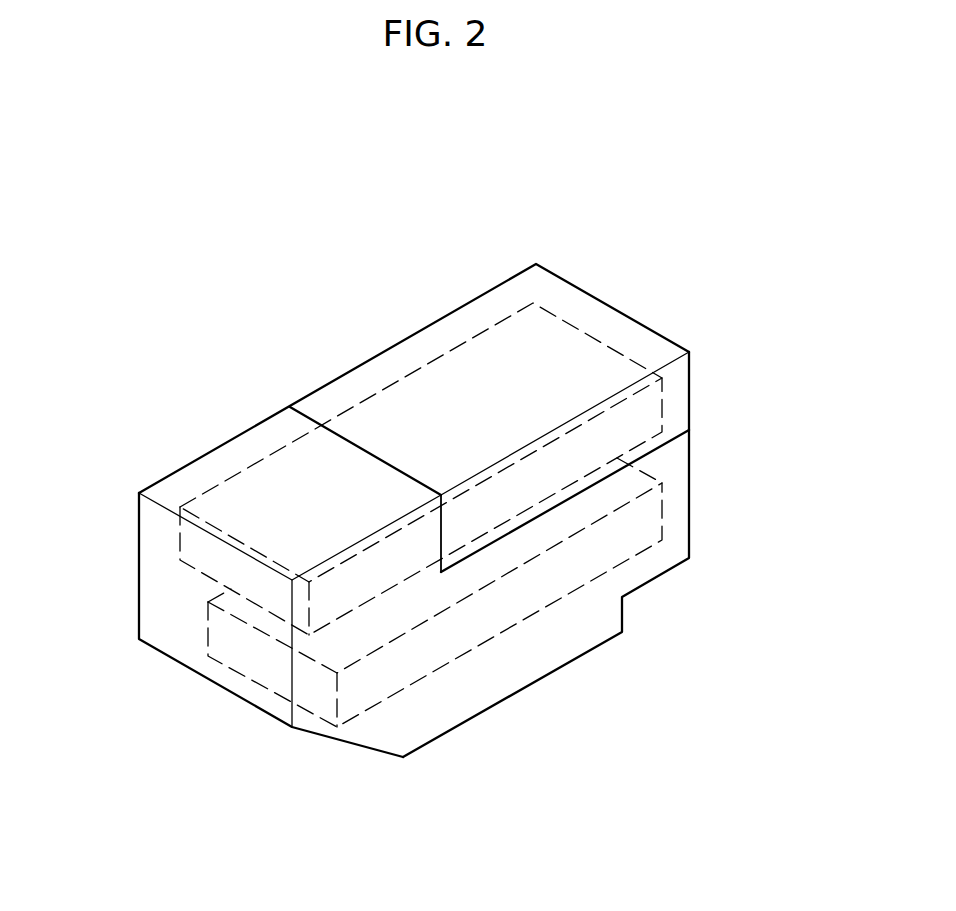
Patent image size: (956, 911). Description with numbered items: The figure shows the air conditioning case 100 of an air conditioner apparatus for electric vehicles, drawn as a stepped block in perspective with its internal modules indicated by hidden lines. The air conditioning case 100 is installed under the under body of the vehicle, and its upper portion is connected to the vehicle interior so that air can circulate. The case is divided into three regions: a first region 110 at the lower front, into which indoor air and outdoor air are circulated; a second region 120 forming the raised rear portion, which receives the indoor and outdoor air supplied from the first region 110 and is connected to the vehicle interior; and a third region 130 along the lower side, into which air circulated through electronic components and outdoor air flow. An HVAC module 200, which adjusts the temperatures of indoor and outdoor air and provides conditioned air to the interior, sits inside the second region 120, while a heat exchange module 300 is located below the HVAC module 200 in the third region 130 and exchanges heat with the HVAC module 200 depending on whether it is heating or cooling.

The air conditioning case 100 is at (592, 272).
The first region 110 is at (220, 447).
The second region 120 is at (414, 332).
The third region 130 is at (660, 567).
The HVAC module 200 is at (611, 347).
The heat exchange module 300 is at (522, 622).